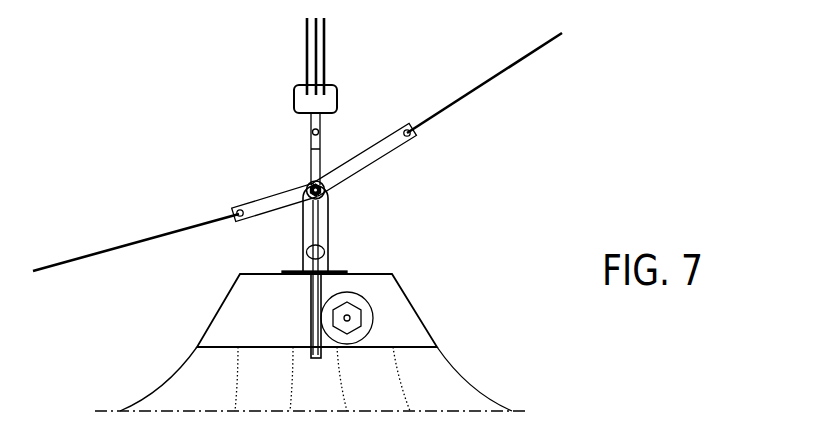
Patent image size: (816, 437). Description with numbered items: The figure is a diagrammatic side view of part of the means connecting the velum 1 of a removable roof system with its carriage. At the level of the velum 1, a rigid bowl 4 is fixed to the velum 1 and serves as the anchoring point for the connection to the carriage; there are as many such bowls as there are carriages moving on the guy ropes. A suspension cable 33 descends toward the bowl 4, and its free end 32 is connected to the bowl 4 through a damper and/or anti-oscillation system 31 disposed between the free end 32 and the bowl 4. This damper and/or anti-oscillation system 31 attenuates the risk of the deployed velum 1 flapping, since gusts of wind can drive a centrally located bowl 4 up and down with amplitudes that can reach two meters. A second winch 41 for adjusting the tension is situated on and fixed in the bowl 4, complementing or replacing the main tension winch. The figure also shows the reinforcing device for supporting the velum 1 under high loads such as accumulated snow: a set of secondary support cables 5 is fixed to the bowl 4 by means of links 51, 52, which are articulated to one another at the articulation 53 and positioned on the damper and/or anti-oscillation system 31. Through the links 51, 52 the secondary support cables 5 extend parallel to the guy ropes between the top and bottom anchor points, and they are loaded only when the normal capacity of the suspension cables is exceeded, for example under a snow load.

The velum 1 is at (200, 390).
The bowl 4 is at (400, 333).
The second winch 41 is at (370, 308).
The secondary support cables 5 is at (85, 257).
The damper and/or anti-oscillation system 31 is at (332, 226).
The free end of the suspension cable 32 is at (319, 132).
The suspension cable 33 is at (305, 47).
The link 51 is at (395, 150).
The link 52 is at (255, 205).
The articulation 53 is at (310, 184).